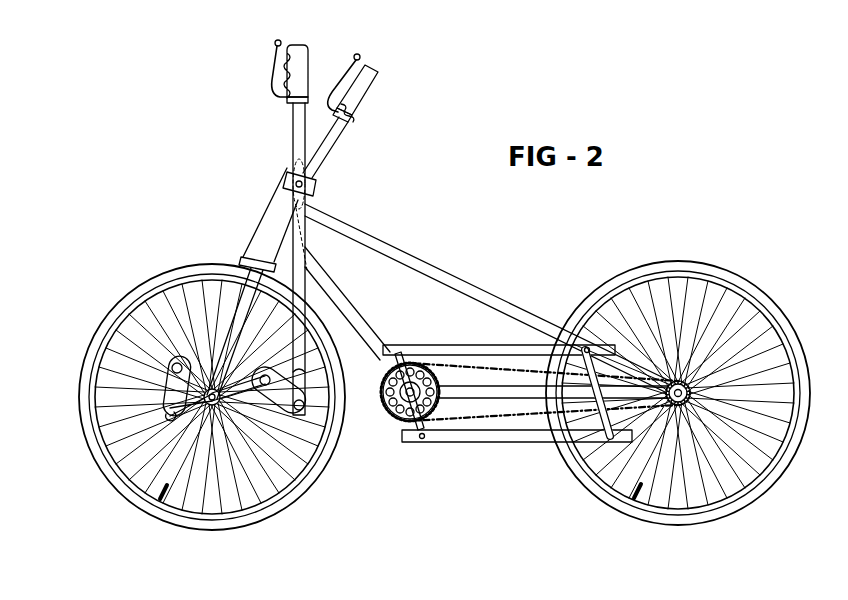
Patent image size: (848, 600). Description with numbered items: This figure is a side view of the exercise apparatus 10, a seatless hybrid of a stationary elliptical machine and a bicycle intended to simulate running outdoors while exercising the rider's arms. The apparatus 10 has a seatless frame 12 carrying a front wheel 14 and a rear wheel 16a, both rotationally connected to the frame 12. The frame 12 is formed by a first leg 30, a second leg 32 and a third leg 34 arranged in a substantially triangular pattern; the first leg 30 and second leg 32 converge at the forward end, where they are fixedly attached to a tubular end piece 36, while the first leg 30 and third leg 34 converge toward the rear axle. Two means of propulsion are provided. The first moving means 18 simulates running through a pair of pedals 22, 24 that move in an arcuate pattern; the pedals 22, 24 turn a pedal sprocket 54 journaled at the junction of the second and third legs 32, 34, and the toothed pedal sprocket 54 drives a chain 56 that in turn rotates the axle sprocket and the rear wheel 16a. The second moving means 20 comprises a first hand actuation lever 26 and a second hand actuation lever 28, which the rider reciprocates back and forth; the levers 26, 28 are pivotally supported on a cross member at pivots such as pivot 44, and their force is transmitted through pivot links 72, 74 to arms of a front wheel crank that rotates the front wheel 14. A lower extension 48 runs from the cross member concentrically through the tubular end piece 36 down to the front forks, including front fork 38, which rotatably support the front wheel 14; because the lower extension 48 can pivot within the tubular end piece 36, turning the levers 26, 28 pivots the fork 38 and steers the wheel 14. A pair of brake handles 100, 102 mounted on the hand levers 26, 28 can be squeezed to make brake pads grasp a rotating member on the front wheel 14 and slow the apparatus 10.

The exercise apparatus 10 is at (703, 133).
The seatless frame 12 is at (427, 264).
The front wheel 14 is at (143, 505).
The rear wheel 16a is at (770, 480).
The first moving means 18 is at (450, 524).
The second moving means 20 is at (58, 435).
The pedal 22 is at (497, 443).
The pedal 24 is at (442, 345).
The first hand actuation lever 26 is at (300, 62).
The second hand actuation lever 28 is at (374, 75).
The first leg 30 is at (522, 318).
The second leg 32 is at (344, 312).
The third leg 34 is at (528, 400).
The tubular end piece 36 is at (285, 212).
The front fork 38 is at (170, 278).
The pivot 44 is at (320, 181).
The lower extension 48 is at (262, 260).
The pedal sprocket 54 is at (392, 412).
The chain 56 is at (470, 436).
The pivot link 72 is at (280, 418).
The pivot link 74 is at (168, 412).
The brake handle 100 is at (272, 72).
The brake handle 102 is at (340, 72).